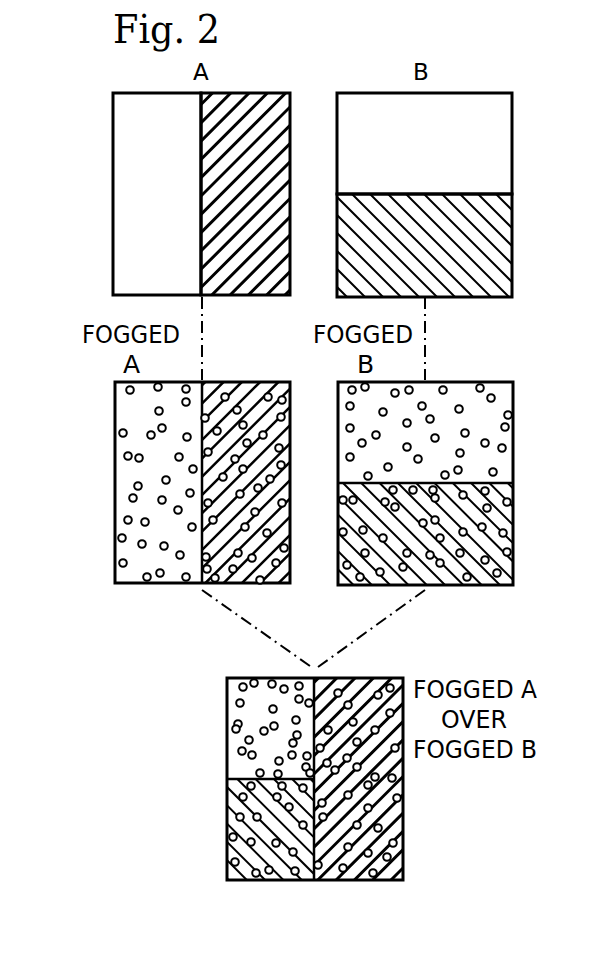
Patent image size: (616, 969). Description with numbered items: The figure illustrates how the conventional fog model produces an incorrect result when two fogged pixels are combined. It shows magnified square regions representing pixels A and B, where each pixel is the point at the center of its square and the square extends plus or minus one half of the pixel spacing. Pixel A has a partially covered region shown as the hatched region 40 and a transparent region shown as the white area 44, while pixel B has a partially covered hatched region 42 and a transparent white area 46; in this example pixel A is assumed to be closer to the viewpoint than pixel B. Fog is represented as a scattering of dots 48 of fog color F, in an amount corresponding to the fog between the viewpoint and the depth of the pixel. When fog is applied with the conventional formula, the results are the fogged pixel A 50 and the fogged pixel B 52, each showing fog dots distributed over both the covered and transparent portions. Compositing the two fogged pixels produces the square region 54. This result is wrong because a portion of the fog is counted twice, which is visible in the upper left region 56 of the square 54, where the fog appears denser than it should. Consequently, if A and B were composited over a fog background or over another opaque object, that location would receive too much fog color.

The hatched region 40 is at (267, 93).
The white area 44 is at (113, 177).
The white area 46 is at (512, 124).
The hatched region 42 is at (512, 217).
The dots 48 is at (147, 434).
The fogged pixel A 50 is at (242, 478).
The fogged pixel B 52 is at (544, 481).
The square region 54 is at (355, 779).
The upper left region 56 is at (227, 734).